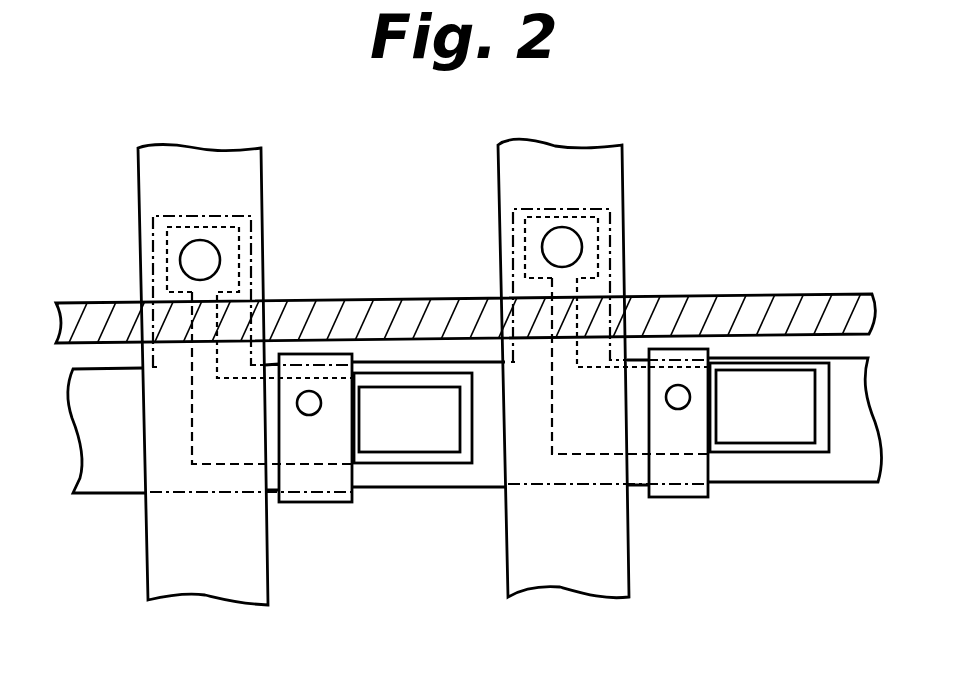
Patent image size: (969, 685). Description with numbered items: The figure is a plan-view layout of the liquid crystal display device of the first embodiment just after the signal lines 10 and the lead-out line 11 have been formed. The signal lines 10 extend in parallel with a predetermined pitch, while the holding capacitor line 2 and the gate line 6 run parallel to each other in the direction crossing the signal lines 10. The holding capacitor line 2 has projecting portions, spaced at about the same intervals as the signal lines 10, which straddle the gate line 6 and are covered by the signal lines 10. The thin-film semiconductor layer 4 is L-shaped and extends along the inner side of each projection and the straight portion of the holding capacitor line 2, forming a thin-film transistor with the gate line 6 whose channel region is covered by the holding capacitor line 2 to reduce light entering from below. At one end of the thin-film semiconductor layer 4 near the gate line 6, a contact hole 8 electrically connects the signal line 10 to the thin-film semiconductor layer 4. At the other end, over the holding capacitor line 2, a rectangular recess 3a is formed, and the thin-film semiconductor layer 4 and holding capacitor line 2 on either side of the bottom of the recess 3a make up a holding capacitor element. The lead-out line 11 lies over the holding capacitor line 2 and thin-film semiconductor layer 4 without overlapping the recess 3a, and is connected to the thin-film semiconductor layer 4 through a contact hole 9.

The holding capacitor line 2 is at (110, 473).
The recess 3a is at (385, 442).
The thin-film semiconductor layer 4 is at (453, 455).
The gate line 6 is at (79, 317).
The contact hole 8 is at (184, 259).
The contact hole 9 is at (310, 397).
The signal line 10 is at (208, 578).
The lead-out line 11 is at (305, 498).